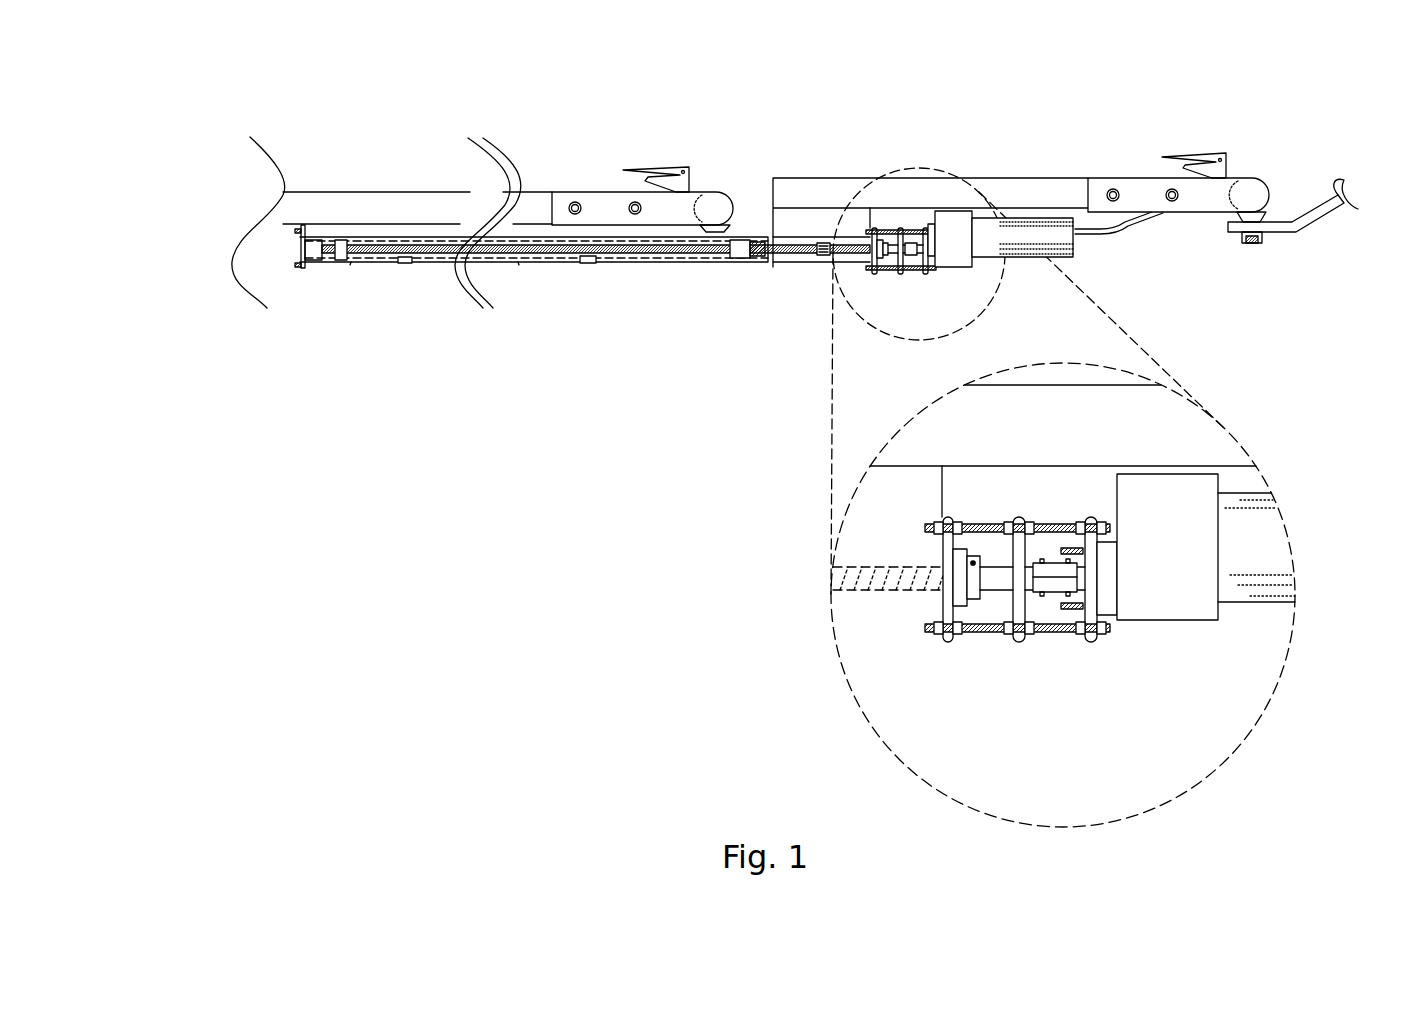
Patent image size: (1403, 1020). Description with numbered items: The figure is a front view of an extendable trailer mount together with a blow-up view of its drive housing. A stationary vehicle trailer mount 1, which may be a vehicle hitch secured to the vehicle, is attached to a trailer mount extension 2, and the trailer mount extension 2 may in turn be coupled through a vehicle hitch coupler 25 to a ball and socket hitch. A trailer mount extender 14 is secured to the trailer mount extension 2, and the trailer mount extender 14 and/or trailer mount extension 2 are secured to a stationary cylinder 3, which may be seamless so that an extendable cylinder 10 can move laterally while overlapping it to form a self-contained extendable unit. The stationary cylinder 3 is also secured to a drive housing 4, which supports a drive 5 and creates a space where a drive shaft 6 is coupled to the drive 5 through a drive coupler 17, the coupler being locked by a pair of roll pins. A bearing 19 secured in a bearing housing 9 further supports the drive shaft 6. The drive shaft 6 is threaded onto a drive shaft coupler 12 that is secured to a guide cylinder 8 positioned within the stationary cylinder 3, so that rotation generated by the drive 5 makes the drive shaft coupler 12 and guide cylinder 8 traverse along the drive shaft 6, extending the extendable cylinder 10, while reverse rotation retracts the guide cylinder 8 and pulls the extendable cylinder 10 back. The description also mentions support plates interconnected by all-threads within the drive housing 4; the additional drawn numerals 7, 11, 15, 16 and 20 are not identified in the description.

The stationary vehicle trailer mount 1 is at (1288, 228).
The trailer mount extension 2 is at (1022, 178).
The stationary cylinder 3 is at (793, 262).
The drive housing 4 is at (1143, 713).
The drive 5 is at (1075, 245).
The drive shaft 6 is at (890, 580).
The end stop 7 is at (343, 248).
The guide cylinder 8 is at (722, 262).
The bearing housing 9 is at (957, 555).
The extendable cylinder 10 is at (350, 265).
The drawbar tube 11 is at (395, 190).
The drive shaft coupler 12 is at (740, 243).
The trailer mount extender 14 is at (805, 218).
The flange plate 15 is at (948, 640).
The tie rod 16 is at (1062, 522).
The drive coupler 17 is at (1058, 575).
The bearing 19 is at (972, 557).
The sensor 20 is at (405, 265).
The vehicle hitch coupler 25 is at (1232, 177).